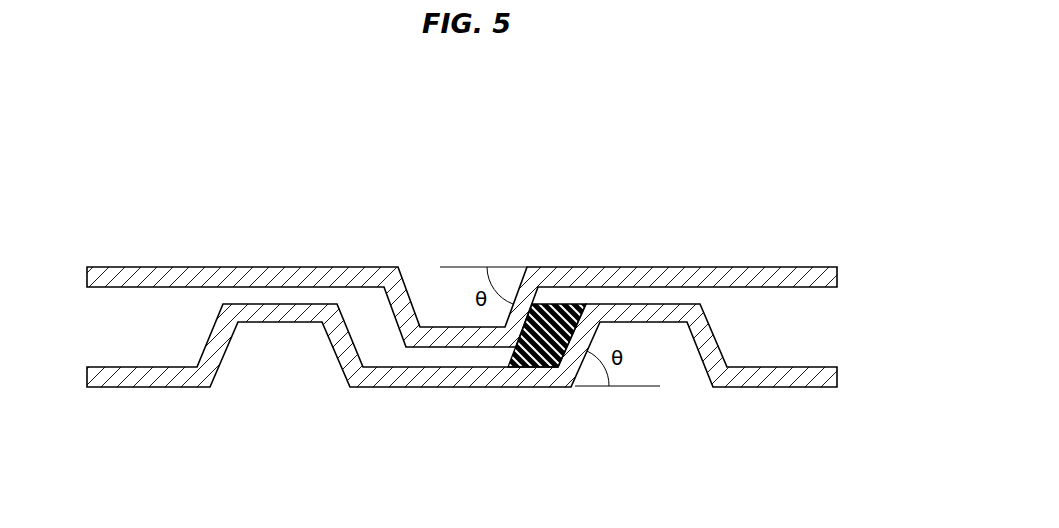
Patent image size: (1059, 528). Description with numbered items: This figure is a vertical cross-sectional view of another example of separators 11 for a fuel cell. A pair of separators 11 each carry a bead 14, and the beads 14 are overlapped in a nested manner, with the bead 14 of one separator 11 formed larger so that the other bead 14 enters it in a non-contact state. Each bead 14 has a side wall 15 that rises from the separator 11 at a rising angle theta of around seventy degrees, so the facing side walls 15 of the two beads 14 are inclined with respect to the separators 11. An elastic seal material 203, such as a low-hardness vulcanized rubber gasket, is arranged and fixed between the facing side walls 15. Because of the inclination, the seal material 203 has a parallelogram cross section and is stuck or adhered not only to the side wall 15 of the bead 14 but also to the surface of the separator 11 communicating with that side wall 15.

The separator 11 is at (310, 267).
The bead 14 is at (445, 387).
The side wall 15 is at (542, 360).
The seal material 203 is at (553, 304).